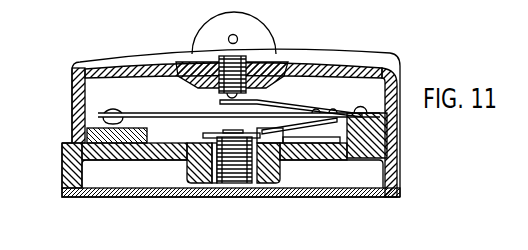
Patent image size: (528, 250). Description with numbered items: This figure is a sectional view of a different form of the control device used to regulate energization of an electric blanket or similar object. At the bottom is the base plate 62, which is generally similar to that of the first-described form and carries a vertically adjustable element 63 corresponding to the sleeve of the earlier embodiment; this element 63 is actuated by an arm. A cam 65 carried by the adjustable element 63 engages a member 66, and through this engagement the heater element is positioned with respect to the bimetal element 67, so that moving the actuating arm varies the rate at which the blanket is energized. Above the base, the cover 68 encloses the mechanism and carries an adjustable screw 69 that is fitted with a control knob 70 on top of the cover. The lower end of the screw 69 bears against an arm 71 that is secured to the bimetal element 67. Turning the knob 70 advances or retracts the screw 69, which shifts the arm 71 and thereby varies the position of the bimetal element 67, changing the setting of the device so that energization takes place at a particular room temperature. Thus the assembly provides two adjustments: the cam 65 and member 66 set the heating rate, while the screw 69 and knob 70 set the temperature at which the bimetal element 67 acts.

The base plate 62 is at (305, 158).
The vertically adjustable element 63 is at (230, 172).
The cam 65 is at (270, 142).
The member 66 is at (355, 160).
The bimetal element 67 is at (197, 113).
The cover 68 is at (83, 70).
The adjustable screw 69 is at (258, 53).
The control knob 70 is at (238, 35).
The arm 71 is at (257, 103).